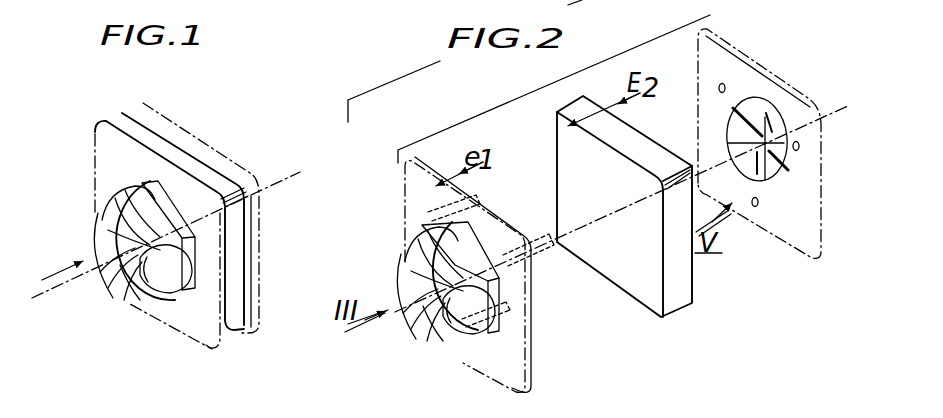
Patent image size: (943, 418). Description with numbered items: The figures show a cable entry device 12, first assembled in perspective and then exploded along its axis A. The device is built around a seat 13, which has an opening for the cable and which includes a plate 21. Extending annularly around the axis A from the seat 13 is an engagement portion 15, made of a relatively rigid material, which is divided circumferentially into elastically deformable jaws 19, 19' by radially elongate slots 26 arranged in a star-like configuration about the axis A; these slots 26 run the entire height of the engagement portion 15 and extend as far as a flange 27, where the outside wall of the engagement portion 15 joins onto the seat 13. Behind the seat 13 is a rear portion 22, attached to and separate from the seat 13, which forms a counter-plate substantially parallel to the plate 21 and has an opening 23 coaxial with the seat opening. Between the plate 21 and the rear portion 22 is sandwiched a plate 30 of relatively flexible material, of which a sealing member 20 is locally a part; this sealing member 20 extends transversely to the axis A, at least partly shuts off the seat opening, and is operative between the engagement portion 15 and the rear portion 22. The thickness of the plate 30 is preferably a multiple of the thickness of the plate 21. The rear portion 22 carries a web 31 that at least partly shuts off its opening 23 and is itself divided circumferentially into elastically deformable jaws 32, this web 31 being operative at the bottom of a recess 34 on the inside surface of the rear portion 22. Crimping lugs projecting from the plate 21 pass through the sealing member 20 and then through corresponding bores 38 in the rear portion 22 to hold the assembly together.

In FIG. 1, the cable entry device 12 is at (49, 279).
In FIG. 2, the cable entry device 12 is at (533, 91).
In FIG. 1, the seat 13 is at (201, 352).
In FIG. 2, the seat 13 is at (467, 365).
In FIG. 1, the engagement portion 15 is at (86, 206).
In FIG. 2, the engagement portion 15 is at (388, 262).
In FIG. 1, the jaw 19 is at (106, 260).
In FIG. 2, the jaw 19 is at (411, 303).
In FIG. 1, the jaw 19' is at (132, 227).
In FIG. 2, the jaw 19' is at (432, 283).
In FIG. 1, the sealing member 20 is at (128, 114).
In FIG. 2, the sealing member 20 is at (683, 312).
In FIG. 1, the plate 21 is at (196, 322).
In FIG. 2, the plate 21 is at (517, 372).
In FIG. 1, the rear portion 22 is at (259, 290).
In FIG. 2, the rear portion 22 is at (794, 262).
In FIG. 2, the opening 23 is at (777, 163).
In FIG. 1, the radially elongate slots 26 is at (138, 195).
In FIG. 2, the radially elongate slots 26 is at (430, 234).
In FIG. 1, the flange 27 is at (168, 208).
In FIG. 2, the flange 27 is at (476, 240).
In FIG. 2, the plate 30 is at (647, 114).
In FIG. 2, the web 31 is at (767, 106).
In FIG. 2, the jaws 32 is at (732, 130).
In FIG. 2, the recess 34 is at (729, 133).
In FIG. 2, the bores 38 is at (723, 84).
In FIG. 1, the axis A is at (299, 184).
In FIG. 2, the axis A is at (837, 105).